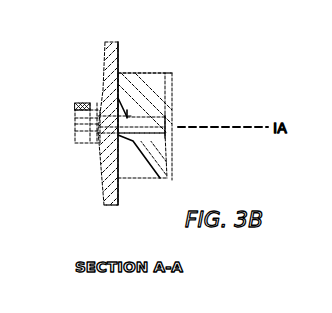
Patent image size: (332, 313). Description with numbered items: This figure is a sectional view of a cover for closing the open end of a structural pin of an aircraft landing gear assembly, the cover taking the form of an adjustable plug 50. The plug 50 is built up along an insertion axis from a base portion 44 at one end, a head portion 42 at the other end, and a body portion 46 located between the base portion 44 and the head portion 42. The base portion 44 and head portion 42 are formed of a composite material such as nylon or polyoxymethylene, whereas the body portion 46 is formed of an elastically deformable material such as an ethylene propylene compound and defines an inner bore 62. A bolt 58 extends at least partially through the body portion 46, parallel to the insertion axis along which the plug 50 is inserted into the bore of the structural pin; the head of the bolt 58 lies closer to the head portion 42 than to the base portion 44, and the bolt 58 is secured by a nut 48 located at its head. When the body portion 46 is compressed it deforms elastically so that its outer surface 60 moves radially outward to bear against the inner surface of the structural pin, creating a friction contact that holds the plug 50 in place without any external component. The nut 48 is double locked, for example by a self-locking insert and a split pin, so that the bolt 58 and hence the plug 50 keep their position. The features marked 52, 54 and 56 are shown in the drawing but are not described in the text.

The head portion 42 is at (108, 73).
The base portion 44 is at (165, 170).
The body portion 46 is at (150, 83).
The nut 48 is at (77, 131).
The adjustable plug 50 is at (210, 41).
The hatched block 52 is at (90, 105).
The central wall 54 is at (118, 98).
The bottom edge 56 is at (138, 178).
The bolt 58 is at (150, 137).
The outer surface of the body portion 60 is at (145, 73).
The inner bore 62 is at (115, 130).